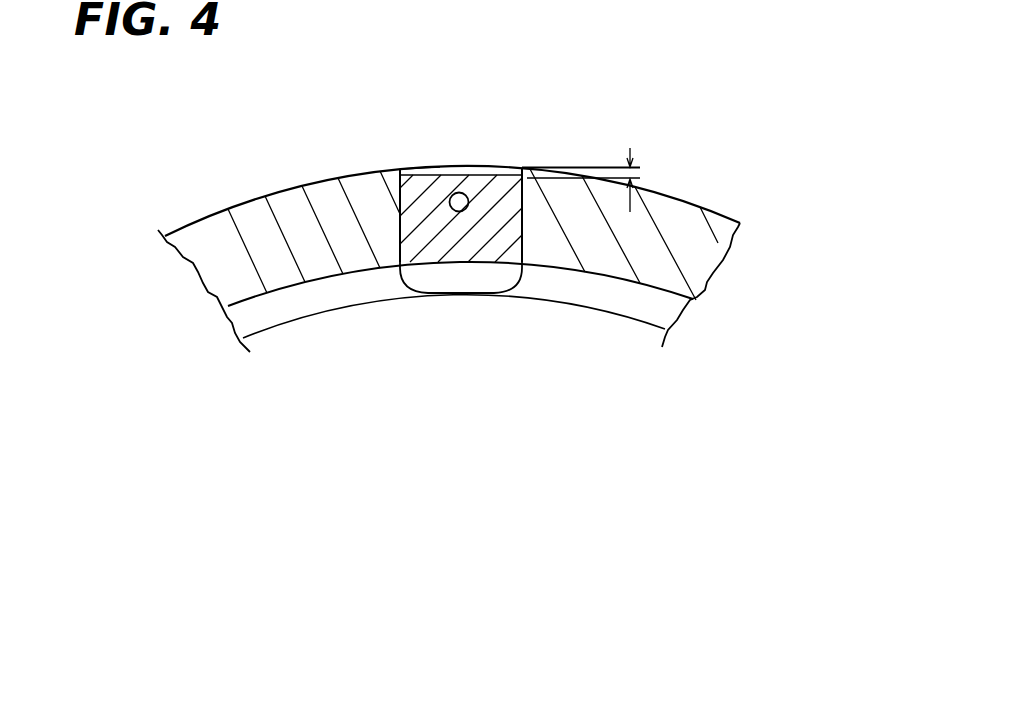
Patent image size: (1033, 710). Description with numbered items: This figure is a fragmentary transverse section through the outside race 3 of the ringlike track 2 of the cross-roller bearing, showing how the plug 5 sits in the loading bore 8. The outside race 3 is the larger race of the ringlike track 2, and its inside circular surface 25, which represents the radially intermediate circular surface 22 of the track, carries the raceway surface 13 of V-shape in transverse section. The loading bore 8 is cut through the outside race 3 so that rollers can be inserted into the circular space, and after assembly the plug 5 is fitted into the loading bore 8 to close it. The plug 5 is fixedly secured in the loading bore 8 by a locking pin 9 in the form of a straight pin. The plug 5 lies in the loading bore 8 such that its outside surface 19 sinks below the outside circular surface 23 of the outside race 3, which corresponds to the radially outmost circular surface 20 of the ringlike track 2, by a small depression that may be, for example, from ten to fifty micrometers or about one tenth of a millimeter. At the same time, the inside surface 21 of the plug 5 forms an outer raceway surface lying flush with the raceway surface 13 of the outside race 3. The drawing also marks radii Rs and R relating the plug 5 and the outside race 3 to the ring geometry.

The outside race 3 is at (488, 258).
The ringlike track 2 is at (677, 245).
The raceway surface 13 is at (658, 310).
The inside circular surface 25 is at (480, 372).
The radially intermediate circular surface 22 is at (631, 318).
The loading bore 8 is at (511, 175).
The outside surface 19 is at (480, 173).
The plug 5 is at (416, 170).
The locking pin 9 is at (457, 192).
The inside surface 21 is at (463, 273).
The outside circular surface 23 is at (650, 149).
The radially outmost circular surface 20 is at (682, 200).
The radius of segment Rs is at (316, 294).
The radius of ring R is at (645, 201).